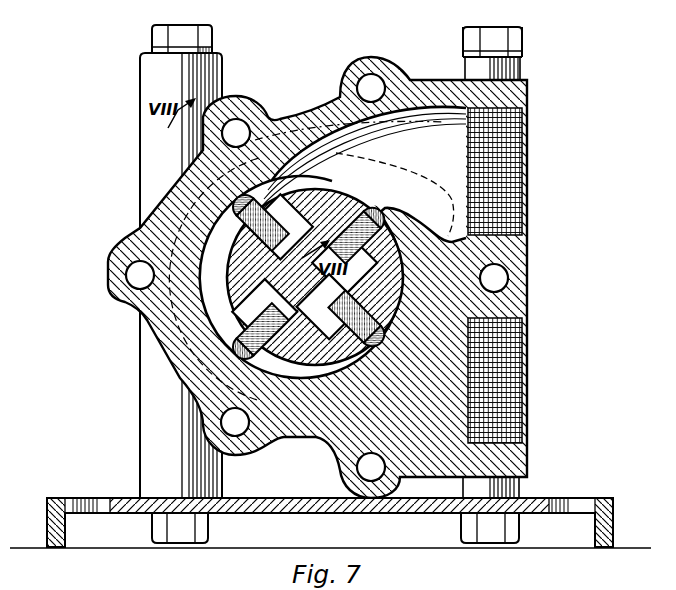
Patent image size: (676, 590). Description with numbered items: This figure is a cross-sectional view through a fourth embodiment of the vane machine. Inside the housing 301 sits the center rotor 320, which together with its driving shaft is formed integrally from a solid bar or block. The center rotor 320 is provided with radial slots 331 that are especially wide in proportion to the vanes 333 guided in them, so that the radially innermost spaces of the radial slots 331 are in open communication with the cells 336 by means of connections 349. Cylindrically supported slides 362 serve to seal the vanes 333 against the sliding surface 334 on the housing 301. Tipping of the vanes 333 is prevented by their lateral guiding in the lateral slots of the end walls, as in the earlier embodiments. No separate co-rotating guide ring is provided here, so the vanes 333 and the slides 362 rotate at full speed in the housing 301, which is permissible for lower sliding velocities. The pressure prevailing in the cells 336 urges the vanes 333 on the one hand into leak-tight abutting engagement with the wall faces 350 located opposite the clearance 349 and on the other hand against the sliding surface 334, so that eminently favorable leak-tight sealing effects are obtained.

The housing 301 is at (420, 88).
The center rotor 320 is at (352, 195).
The radial slots 331 is at (250, 250).
The vanes 333 is at (224, 230).
The sliding surface 334 is at (218, 218).
The cells 336 is at (213, 247).
The connections 349 is at (281, 200).
The wall faces 350 is at (300, 438).
The cylindrically supported slides 362 is at (236, 350).